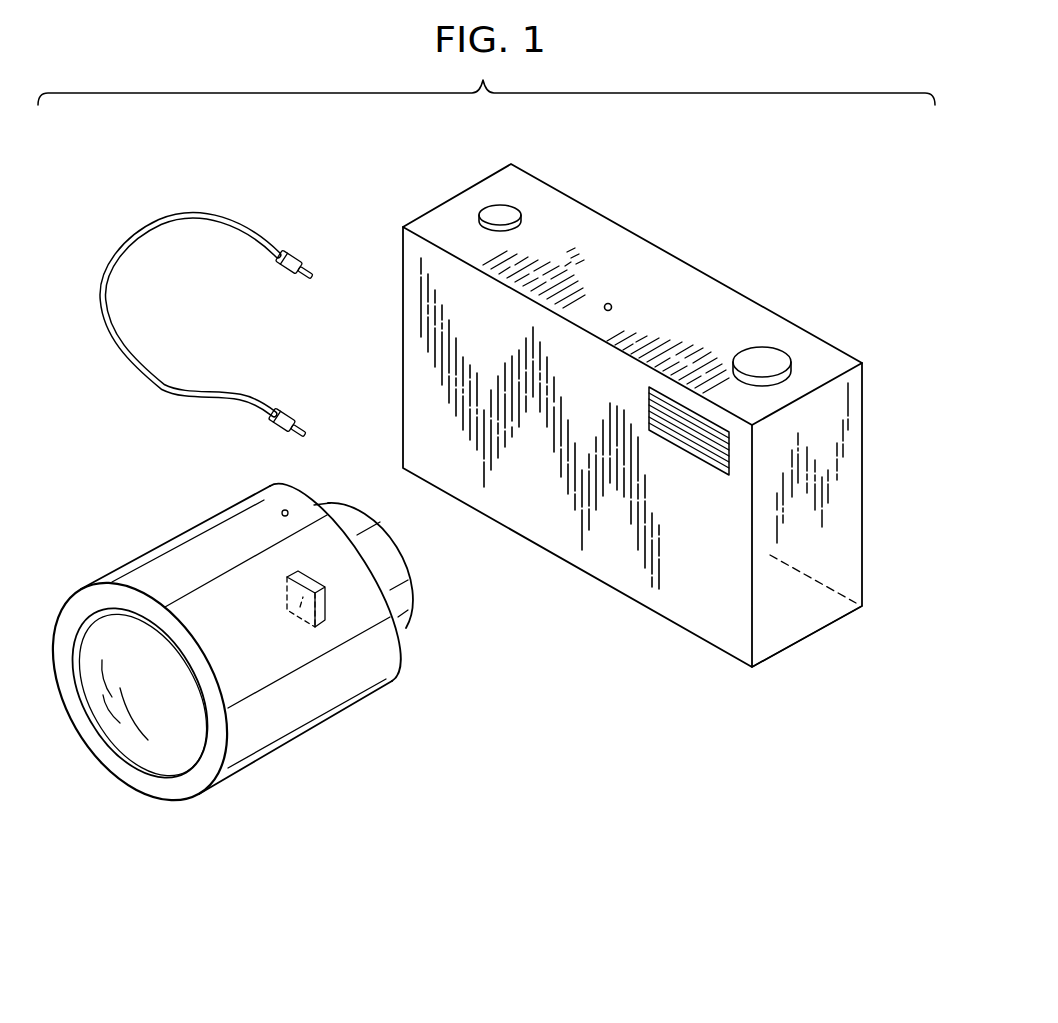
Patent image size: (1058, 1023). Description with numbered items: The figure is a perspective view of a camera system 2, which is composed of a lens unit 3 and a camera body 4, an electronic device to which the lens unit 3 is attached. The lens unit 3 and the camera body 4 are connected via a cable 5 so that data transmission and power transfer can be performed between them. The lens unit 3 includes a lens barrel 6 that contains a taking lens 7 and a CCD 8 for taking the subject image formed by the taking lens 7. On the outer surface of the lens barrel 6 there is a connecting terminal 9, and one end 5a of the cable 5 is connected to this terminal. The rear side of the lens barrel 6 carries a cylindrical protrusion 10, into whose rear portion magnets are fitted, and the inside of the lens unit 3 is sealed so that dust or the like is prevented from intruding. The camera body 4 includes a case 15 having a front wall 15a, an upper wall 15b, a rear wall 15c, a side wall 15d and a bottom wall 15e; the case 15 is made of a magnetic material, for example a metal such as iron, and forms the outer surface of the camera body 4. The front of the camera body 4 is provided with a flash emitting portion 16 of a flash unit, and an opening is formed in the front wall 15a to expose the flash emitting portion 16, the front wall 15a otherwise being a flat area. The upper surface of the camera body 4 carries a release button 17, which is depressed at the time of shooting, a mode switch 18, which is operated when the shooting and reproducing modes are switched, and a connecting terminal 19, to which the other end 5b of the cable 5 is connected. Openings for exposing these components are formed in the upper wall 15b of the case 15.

The camera system 2 is at (568, 788).
The lens unit 3 is at (254, 647).
The camera body 4 is at (669, 439).
The cable 5 is at (199, 327).
The one end of the cable 5a is at (289, 416).
The other end of the cable 5b is at (286, 261).
The lens barrel 6 is at (247, 742).
The taking lens 7 is at (168, 752).
The CCD 8 is at (297, 613).
The connecting terminal 9 is at (282, 511).
The cylindrical protrusion 10 is at (406, 597).
The case 15 is at (697, 627).
The front wall 15a is at (602, 564).
The upper wall 15b is at (705, 296).
The rear wall 15c is at (842, 562).
The side wall 15d is at (838, 504).
The bottom wall 15e is at (814, 632).
The flash emitting portion 16 is at (646, 433).
The release button 17 is at (501, 214).
The mode switch 18 is at (770, 352).
The connecting terminal 19 is at (611, 304).